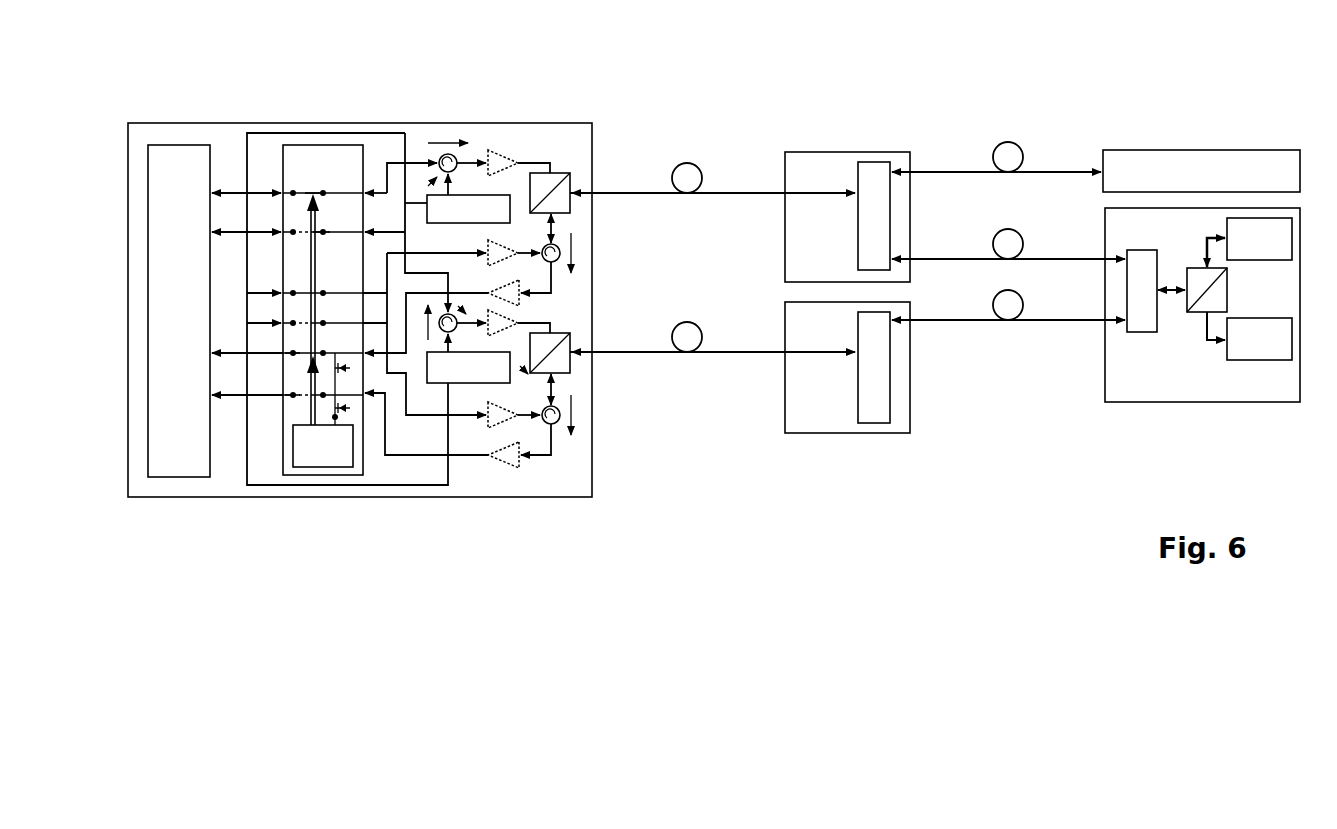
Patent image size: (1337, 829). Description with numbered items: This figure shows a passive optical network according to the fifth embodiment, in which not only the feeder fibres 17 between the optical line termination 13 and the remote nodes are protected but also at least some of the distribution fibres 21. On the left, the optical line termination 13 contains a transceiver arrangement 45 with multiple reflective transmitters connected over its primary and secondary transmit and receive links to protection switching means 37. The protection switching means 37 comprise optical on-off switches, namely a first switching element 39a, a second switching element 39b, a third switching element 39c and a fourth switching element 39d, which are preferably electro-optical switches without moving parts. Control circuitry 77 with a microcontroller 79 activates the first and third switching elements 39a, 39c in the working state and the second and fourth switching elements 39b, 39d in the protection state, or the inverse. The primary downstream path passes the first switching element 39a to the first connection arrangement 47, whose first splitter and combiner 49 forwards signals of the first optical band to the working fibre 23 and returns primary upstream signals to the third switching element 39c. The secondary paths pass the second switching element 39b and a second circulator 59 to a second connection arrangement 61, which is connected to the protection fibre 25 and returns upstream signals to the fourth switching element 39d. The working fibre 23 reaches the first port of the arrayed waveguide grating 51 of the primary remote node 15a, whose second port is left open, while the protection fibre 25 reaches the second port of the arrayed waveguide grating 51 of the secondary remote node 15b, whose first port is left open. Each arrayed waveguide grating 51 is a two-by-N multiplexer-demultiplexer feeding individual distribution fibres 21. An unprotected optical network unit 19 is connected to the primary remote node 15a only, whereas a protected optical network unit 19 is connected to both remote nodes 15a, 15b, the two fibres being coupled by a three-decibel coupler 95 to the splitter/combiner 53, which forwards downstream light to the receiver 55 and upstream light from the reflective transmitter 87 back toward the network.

The optical line termination 13 is at (230, 123).
The primary remote node 15a is at (792, 152).
The secondary remote node 15b is at (793, 433).
The feeder fibres 17 is at (722, 102).
The optical network unit 19 is at (1205, 148).
The distribution fibres 21 is at (988, 116).
The working fibre 23 is at (712, 192).
The protection fibre 25 is at (710, 352).
The protection switching means 37 is at (345, 140).
The first switching element 39a is at (318, 194).
The second switching element 39b is at (303, 236).
The third switching element 39c is at (305, 357).
The fourth switching element 39d is at (292, 400).
The transceiver arrangement 45 is at (165, 145).
The first connection arrangement 47 is at (604, 152).
The first splitter and combiner 49 is at (582, 177).
The arrayed waveguide grating 51 is at (872, 161).
The splitter/combiner 53 is at (1230, 283).
The receiver 55 is at (1232, 350).
The second circulator 59 is at (585, 340).
The second connection arrangement 61 is at (604, 302).
The control circuitry 77 is at (290, 532).
The microcontroller 79 is at (331, 467).
The reflective transmitter 87 is at (1228, 225).
The 3 dB-coupler 95 is at (1140, 255).